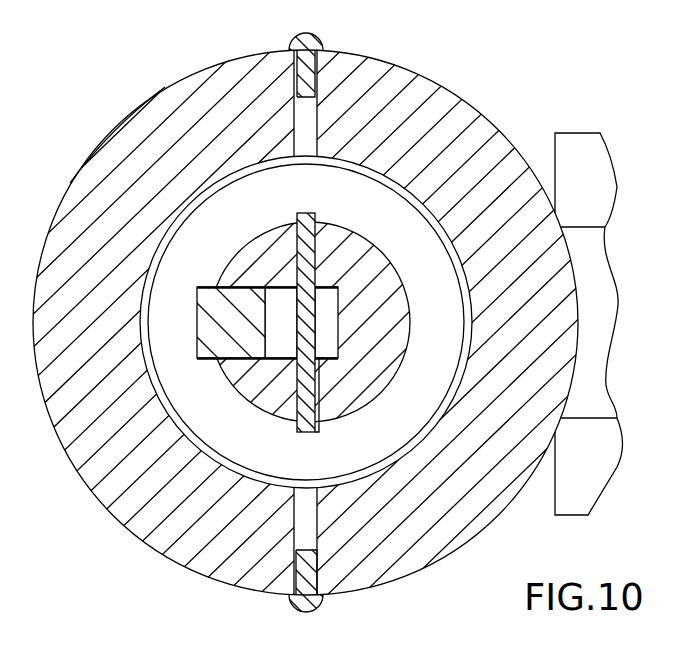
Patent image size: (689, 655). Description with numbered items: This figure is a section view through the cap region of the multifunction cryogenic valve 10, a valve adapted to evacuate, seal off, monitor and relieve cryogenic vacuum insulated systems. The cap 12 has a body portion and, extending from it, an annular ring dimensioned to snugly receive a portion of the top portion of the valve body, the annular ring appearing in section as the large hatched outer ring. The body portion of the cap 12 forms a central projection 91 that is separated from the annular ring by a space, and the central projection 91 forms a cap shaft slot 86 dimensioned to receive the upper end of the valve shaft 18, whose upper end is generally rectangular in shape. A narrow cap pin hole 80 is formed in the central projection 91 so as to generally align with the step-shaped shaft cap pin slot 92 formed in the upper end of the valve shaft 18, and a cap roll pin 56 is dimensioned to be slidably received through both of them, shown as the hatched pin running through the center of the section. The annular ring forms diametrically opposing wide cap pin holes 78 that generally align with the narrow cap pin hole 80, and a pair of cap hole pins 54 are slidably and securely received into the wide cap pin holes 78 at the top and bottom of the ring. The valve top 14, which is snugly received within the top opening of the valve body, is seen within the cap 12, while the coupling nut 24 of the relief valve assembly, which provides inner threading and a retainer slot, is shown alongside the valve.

The multifunction cryogenic valve 10 is at (503, 90).
The cap 12 is at (433, 80).
The valve top 14 is at (430, 400).
The valve shaft 18 is at (228, 347).
The coupling nut 24 is at (607, 168).
The cap hole pins 54 is at (303, 40).
The cap roll pin 56 is at (305, 432).
The wide cap pin holes 78 is at (312, 85).
The narrow cap pin hole 80 is at (300, 232).
The cap shaft slot 86 is at (265, 305).
The central projection 91 is at (268, 403).
The shaft cap pin slot 92 is at (330, 303).